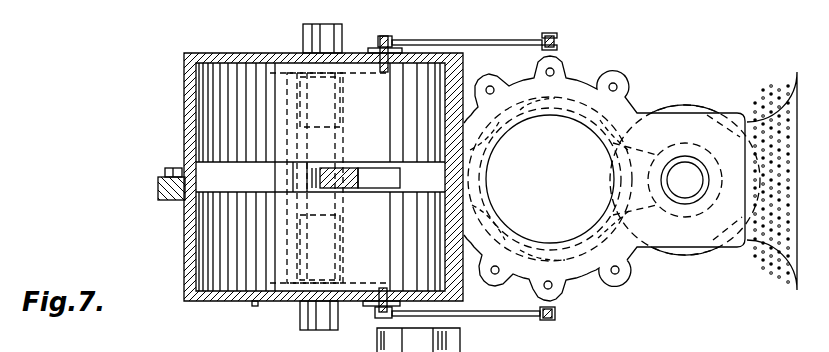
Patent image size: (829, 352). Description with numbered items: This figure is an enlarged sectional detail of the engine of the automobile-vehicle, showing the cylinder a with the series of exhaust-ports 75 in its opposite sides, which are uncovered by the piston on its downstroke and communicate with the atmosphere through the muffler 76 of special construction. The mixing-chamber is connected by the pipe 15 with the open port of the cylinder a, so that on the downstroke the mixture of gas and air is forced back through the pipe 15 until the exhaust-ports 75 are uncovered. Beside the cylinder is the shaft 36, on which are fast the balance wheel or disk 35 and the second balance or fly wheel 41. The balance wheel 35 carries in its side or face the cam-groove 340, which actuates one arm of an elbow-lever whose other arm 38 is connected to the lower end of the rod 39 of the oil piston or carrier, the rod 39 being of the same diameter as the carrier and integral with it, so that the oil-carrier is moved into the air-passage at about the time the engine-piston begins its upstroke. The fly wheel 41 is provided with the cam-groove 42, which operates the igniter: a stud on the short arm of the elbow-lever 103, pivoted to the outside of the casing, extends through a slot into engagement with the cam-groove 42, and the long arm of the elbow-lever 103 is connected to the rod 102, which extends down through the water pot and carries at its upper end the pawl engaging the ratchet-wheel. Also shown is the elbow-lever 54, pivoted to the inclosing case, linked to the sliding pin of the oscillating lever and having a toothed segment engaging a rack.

The pipe 15 is at (685, 180).
The balance wheel or disk 35 is at (205, 273).
The shaft 36 is at (303, 31).
The arm of elbow-lever 38 is at (451, 316).
The rod of oil piston 39 is at (547, 320).
The second balance or fly wheel 41 is at (207, 124).
The cam-groove 42 is at (272, 66).
The elbow-lever 54 is at (373, 181).
The exhaust-ports 75 is at (493, 183).
The muffler 76 is at (768, 252).
The rod 102 is at (548, 35).
The elbow-lever 103 is at (455, 40).
The cam-groove 340 is at (256, 306).
The cylinder a is at (614, 186).